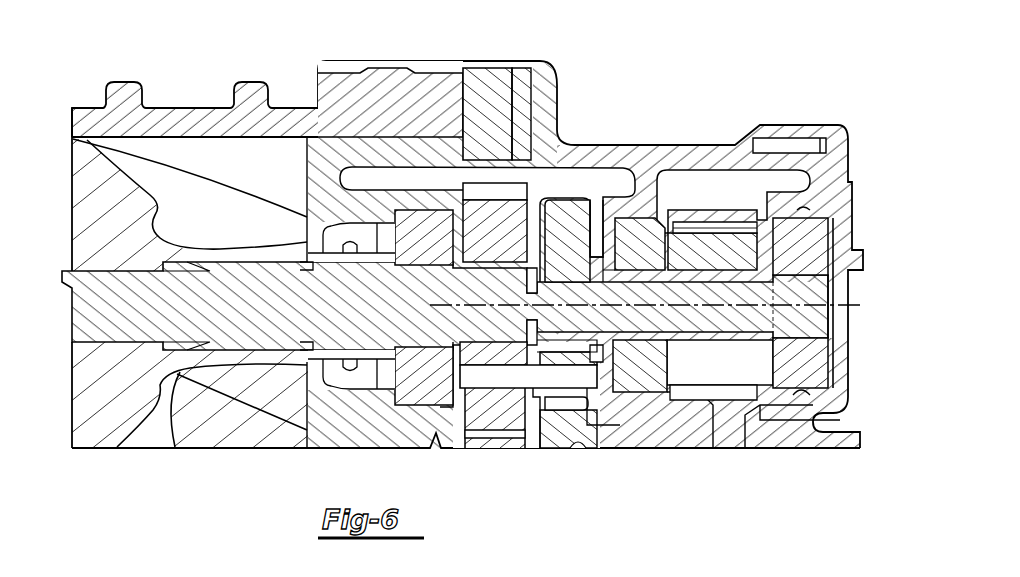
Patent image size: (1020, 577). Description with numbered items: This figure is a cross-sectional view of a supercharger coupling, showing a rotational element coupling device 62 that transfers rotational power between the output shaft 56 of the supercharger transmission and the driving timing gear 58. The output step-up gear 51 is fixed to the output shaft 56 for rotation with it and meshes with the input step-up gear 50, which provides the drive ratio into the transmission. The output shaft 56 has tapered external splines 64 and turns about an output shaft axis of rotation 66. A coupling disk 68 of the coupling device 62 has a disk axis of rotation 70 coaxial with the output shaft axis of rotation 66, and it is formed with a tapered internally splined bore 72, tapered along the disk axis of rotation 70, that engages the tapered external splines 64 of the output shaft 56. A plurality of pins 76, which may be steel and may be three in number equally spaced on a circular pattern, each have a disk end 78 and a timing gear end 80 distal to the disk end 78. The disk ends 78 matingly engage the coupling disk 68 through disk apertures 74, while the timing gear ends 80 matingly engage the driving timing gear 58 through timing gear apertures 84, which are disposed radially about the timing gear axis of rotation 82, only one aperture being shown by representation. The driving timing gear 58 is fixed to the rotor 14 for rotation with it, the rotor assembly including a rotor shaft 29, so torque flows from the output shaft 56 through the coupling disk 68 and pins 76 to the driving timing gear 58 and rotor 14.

The rotor 14 is at (120, 190).
The rotor shaft 29 is at (233, 278).
The input step-up gear 50 is at (697, 432).
The output step-up gear 51 is at (683, 247).
The output shaft 56 is at (726, 272).
The driving timing gear 58 is at (478, 218).
The rotational element coupling device 62 is at (537, 172).
The tapered external splines 64 is at (592, 280).
The output shaft axis of rotation 66 is at (738, 308).
The coupling disk 68 is at (576, 210).
The disk axis of rotation 70 is at (580, 340).
The tapered internally splined bore 72 is at (553, 282).
The disk apertures 74 is at (582, 398).
The pins 76 is at (569, 398).
The disk end 78 is at (598, 398).
The timing gear end 80 is at (472, 400).
The timing gear axis of rotation 82 is at (466, 300).
The timing gear apertures 84 is at (507, 400).